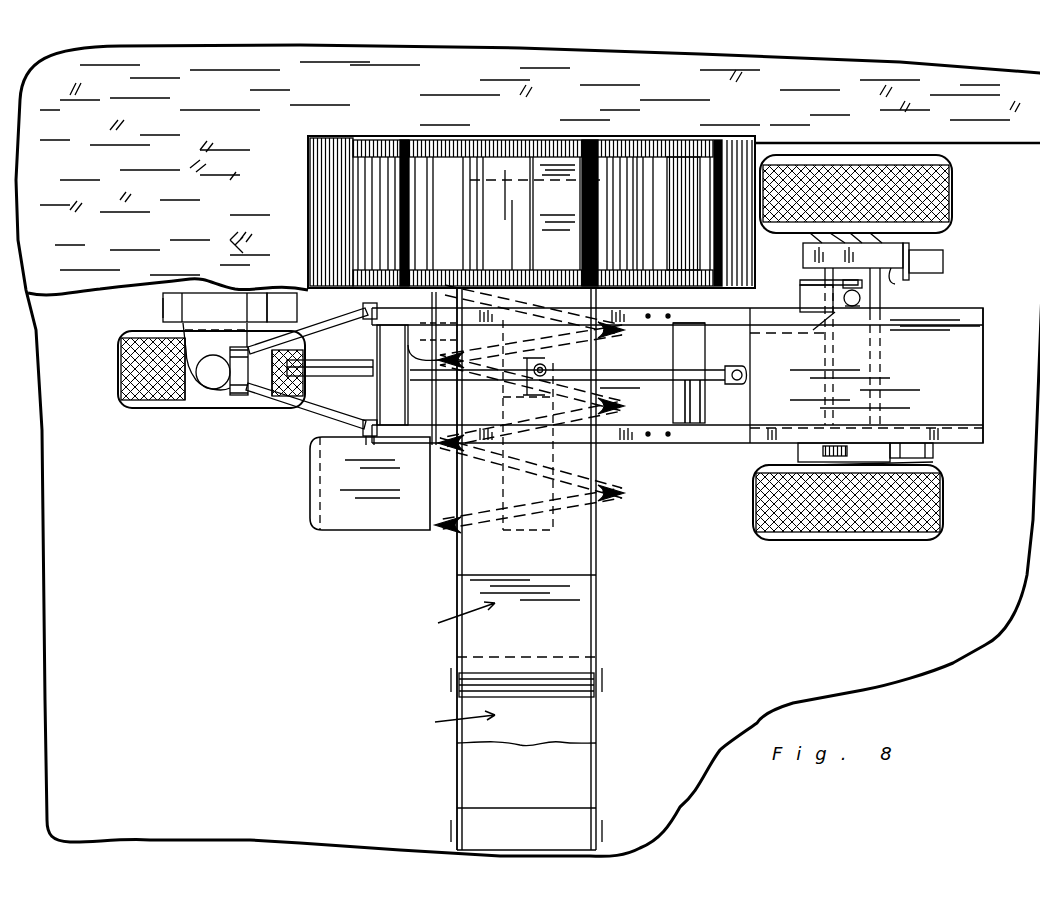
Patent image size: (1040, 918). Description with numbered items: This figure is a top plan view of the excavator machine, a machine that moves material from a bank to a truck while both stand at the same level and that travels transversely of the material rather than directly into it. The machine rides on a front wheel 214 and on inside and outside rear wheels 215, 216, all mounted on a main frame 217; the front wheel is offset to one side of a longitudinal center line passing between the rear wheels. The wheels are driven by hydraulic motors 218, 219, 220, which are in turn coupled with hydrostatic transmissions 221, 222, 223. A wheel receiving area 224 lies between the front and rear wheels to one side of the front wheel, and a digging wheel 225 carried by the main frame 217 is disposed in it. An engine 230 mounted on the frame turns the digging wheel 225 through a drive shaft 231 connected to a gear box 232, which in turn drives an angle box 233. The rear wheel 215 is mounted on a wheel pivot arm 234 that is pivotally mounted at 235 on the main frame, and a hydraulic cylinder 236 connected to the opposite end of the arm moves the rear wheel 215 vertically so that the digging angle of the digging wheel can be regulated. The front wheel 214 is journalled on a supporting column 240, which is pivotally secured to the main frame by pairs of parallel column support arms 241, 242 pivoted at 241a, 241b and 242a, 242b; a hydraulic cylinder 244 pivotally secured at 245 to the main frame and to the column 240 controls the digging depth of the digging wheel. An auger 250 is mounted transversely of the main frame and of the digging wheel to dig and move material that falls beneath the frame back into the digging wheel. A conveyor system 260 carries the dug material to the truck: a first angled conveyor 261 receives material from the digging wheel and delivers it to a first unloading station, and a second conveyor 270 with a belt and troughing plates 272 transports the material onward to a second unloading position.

The front wheel 214 is at (142, 410).
The inside rear wheel 215 is at (945, 198).
The outside rear wheel 216 is at (942, 525).
The main frame 217 is at (975, 372).
The hydraulic motor 218 is at (287, 300).
The hydraulic motor 219 is at (946, 250).
The hydraulic motor 220 is at (920, 457).
The hydrostatic transmission 221 is at (170, 306).
The hydrostatic transmission 222 is at (908, 287).
The hydrostatic transmission 223 is at (935, 475).
The wheel receiving area 224 is at (775, 293).
The digging wheel 225 is at (668, 298).
The engine 230 is at (983, 418).
The drive shaft 231 is at (710, 385).
The gear box 232 is at (493, 385).
The angle box 233 is at (430, 345).
The wheel pivot arm 234 is at (742, 360).
The pivot of wheel pivot arm 235 is at (686, 425).
The hydraulic cylinder 236 is at (860, 302).
The supporting column 240 is at (212, 380).
The column support arm 241 is at (313, 413).
The pivot of column support arm 241a is at (237, 396).
The pivot of column support arm 241b is at (372, 440).
The column support arm 242 is at (362, 338).
The pivot of column support arm 242a is at (215, 311).
The pivot of column support arm 242b is at (363, 306).
The hydraulic cylinder 244 is at (318, 378).
The pivot of hydraulic cylinder 245 is at (310, 332).
The auger 250 is at (625, 505).
The conveyor system 260 is at (610, 570).
The first angled conveyor 261 is at (620, 390).
The second conveyor 270 is at (443, 667).
The troughing plates 272 is at (457, 580).